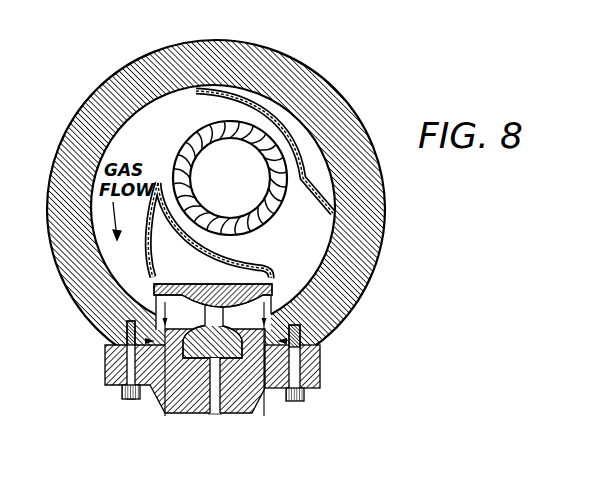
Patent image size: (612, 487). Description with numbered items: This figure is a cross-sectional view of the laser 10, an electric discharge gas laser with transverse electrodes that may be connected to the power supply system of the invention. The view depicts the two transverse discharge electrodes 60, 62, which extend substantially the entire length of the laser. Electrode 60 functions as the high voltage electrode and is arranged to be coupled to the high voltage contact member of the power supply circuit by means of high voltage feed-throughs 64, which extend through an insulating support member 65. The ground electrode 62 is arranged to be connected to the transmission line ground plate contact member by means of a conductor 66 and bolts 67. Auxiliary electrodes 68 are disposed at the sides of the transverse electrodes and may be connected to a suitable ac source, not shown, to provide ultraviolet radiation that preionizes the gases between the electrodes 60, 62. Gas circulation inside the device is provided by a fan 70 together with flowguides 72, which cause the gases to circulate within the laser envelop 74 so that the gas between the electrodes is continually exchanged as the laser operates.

The laser 10 is at (529, 6).
The high voltage electrode 60 is at (216, 406).
The ground electrode 62 is at (274, 288).
The high voltage feed-throughs 64 is at (212, 413).
The insulating support member 65 is at (253, 387).
The conductor 66 is at (157, 329).
The bolts 67 is at (122, 396).
The auxiliary electrodes 68 is at (150, 305).
The fan 70 is at (175, 152).
The flowguides 72 is at (304, 178).
The laser envelop 74 is at (233, 42).